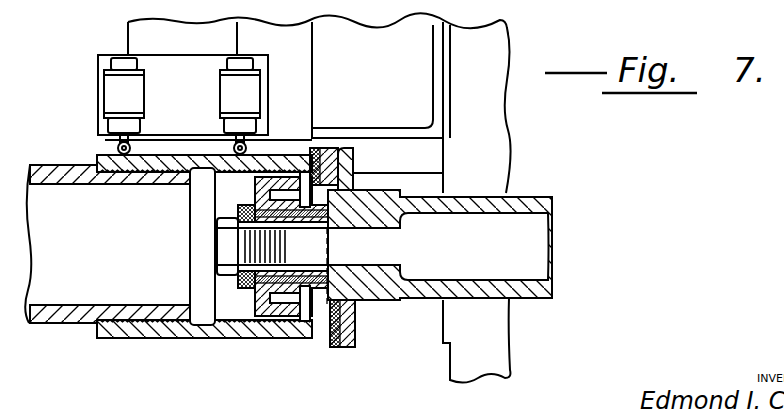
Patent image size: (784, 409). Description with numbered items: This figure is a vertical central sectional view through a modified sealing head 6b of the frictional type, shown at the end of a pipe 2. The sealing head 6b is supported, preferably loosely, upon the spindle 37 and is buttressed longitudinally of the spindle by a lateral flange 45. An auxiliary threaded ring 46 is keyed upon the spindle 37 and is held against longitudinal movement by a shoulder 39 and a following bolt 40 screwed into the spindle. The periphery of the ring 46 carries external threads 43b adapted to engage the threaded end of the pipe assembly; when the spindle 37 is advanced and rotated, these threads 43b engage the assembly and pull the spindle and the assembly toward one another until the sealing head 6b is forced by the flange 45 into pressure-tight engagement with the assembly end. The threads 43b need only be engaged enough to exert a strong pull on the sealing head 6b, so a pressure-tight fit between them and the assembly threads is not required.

The pipe 2 is at (58, 314).
The following bolt 40 is at (230, 247).
The auxiliary threaded ring 46 is at (243, 300).
The external threads 43b is at (283, 375).
The sealing head 6b is at (318, 378).
The lateral flange 45 is at (355, 333).
The shoulder 39 is at (363, 305).
The spindle 37 is at (383, 305).